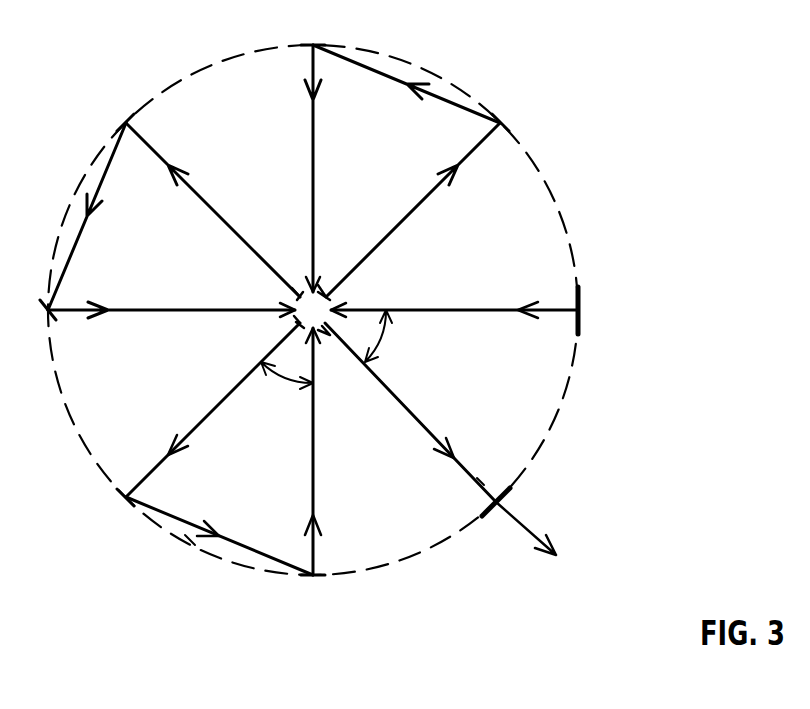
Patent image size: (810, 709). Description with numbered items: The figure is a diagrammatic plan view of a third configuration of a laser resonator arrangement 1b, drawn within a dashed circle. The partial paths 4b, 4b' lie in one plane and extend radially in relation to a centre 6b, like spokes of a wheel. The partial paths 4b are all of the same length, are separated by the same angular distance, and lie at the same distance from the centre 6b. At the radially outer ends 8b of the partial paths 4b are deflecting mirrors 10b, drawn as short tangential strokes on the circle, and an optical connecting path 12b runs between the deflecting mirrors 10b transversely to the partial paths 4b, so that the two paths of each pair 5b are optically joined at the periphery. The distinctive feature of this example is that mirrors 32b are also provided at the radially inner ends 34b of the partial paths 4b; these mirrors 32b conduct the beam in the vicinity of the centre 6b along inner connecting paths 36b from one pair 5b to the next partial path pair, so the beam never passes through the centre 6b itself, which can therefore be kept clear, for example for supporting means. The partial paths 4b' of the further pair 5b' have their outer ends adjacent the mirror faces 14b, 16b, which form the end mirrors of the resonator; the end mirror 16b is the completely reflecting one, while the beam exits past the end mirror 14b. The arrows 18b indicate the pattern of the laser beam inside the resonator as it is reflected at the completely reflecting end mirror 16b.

The laser resonator arrangement 1b is at (600, 180).
The partial paths 4b is at (250, 449).
The partial paths of the further pair 4b' is at (410, 412).
The pair of partial paths 5b is at (219, 535).
The further pair of partial paths 5b' is at (563, 409).
The centre 6b is at (350, 302).
The radially outer ends 8b is at (132, 500).
The deflecting mirrors 10b is at (120, 488).
The optical connecting path 12b is at (190, 540).
The end mirror 14b is at (494, 517).
The end mirror 16b is at (582, 302).
The arrows 18b is at (520, 301).
The mirrors 32b is at (318, 285).
The radially inner ends 34b is at (296, 322).
The inner connecting paths 36b is at (300, 292).